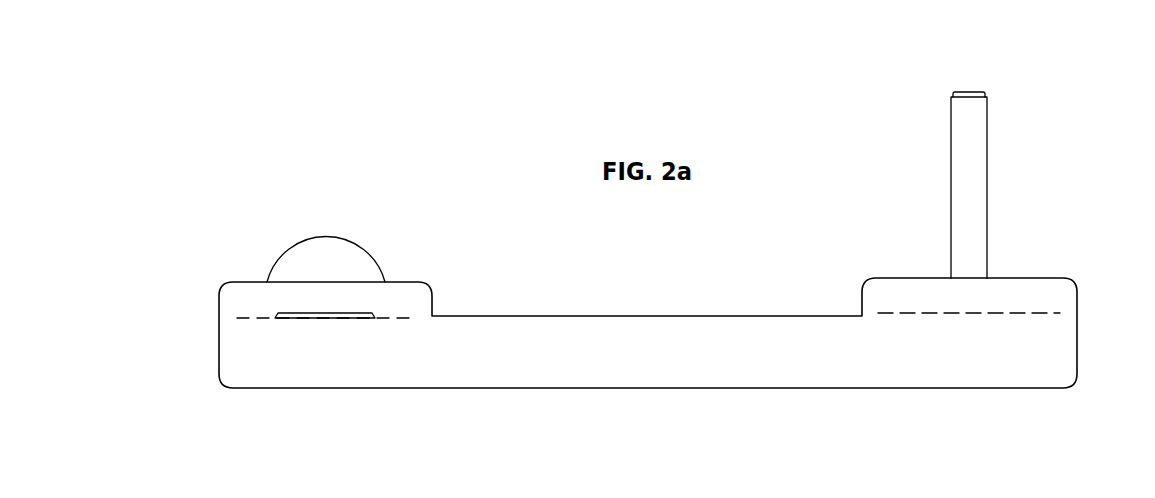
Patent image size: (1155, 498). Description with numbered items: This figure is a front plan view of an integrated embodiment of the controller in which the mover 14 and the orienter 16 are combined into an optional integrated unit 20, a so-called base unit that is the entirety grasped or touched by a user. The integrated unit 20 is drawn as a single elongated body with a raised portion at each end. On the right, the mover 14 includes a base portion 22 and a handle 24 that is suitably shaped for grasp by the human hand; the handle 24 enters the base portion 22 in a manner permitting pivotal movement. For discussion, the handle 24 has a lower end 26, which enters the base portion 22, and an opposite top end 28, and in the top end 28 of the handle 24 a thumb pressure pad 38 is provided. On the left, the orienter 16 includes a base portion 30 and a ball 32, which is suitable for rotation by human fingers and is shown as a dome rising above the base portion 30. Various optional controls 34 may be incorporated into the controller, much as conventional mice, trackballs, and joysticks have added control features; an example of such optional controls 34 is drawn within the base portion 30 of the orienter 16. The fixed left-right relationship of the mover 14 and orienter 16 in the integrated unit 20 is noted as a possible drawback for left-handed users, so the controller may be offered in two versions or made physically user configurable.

The mover 14 is at (989, 165).
The orienter 16 is at (292, 265).
The integrated unit 20 is at (659, 364).
The base portion 22 is at (1060, 331).
The handle 24 is at (968, 187).
The lower end 26 is at (968, 260).
The top end 28 is at (968, 115).
The base portion 30 is at (237, 336).
The ball 32 is at (327, 247).
The optional controls 34 is at (325, 318).
The thumb pressure pad 38 is at (970, 91).